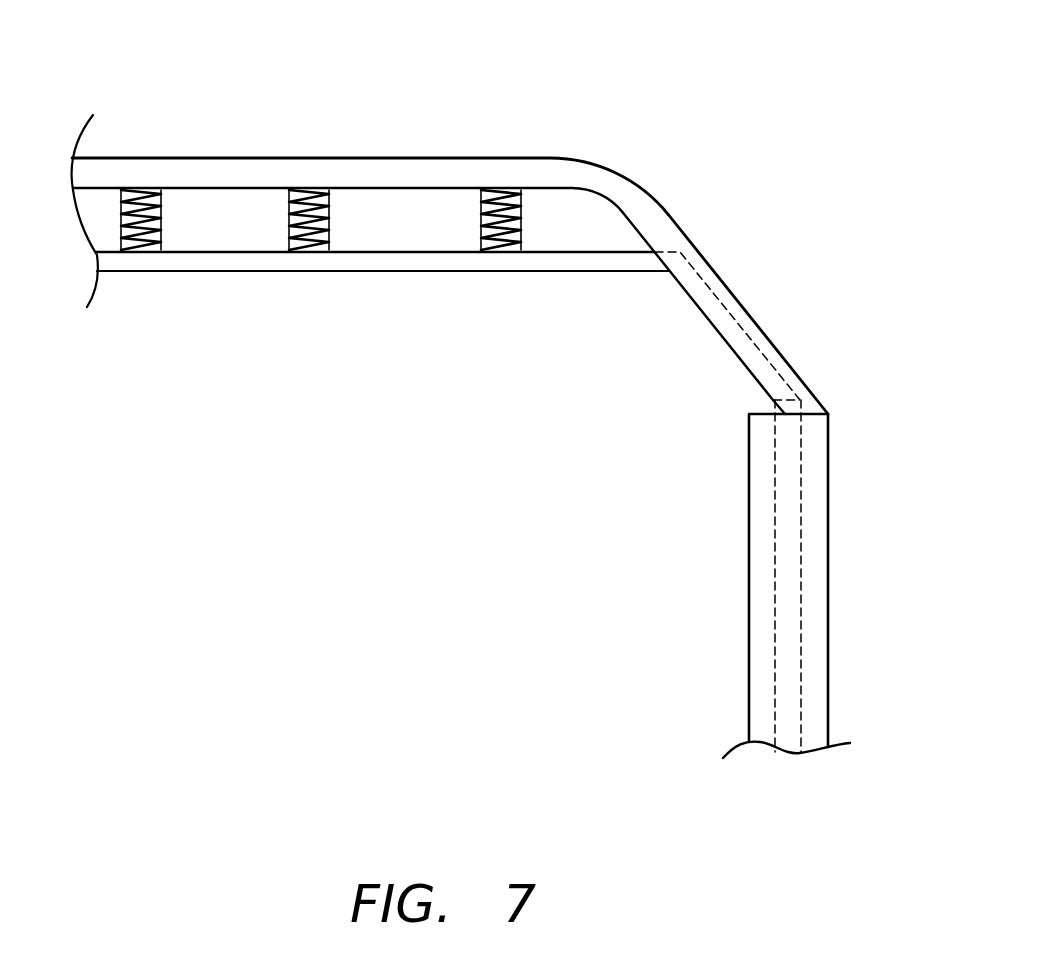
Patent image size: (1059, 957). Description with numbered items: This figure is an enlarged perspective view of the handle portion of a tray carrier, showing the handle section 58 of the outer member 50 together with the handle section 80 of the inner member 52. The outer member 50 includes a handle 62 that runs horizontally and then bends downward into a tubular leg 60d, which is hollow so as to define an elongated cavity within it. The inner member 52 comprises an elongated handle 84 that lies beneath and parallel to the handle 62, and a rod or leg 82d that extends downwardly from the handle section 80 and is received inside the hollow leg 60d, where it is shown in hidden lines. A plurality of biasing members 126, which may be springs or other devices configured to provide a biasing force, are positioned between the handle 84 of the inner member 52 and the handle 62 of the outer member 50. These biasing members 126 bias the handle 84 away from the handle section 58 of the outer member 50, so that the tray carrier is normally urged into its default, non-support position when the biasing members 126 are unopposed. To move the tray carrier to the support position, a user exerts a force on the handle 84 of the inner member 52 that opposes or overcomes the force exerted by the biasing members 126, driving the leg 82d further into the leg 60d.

The handle section 58 is at (593, 53).
The handle 62 is at (270, 158).
The outer member 50 is at (660, 210).
The inner member 52 is at (780, 527).
The leg 60d is at (749, 506).
The leg 82d is at (772, 622).
The handle 84 is at (205, 272).
The biasing member 126 is at (145, 253).
The handle section 80 is at (348, 353).